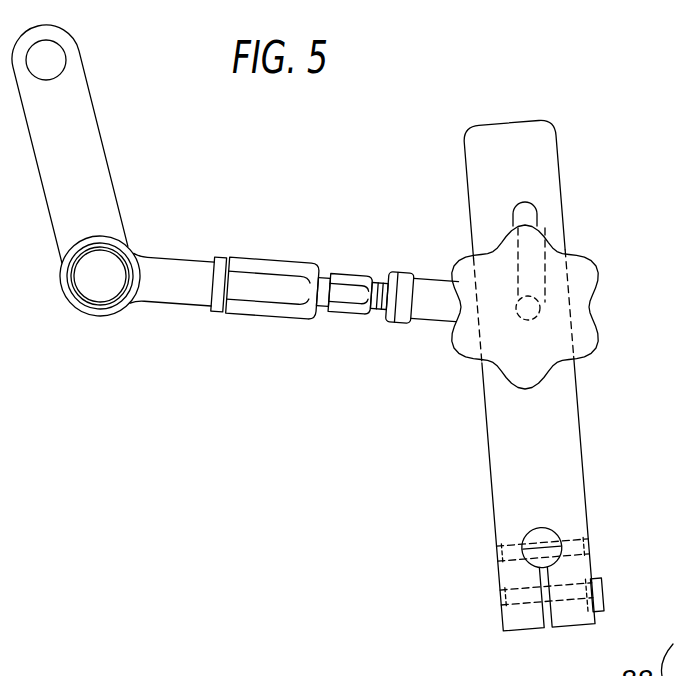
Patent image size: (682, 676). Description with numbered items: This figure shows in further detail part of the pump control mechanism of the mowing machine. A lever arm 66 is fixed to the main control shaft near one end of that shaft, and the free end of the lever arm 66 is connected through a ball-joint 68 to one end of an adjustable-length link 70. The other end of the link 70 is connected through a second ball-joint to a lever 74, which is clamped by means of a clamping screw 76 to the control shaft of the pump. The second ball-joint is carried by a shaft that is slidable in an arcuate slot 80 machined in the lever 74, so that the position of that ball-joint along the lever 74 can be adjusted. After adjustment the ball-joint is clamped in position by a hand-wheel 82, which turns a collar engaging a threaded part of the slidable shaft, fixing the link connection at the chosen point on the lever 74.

The lever arm 66 is at (88, 146).
The ball-joint 68 is at (88, 311).
The adjustable-length link 70 is at (160, 268).
The lever 74 is at (555, 421).
The clamping screw 76 is at (597, 589).
The arcuate slot 80 is at (540, 205).
The hand-wheel 82 is at (580, 343).